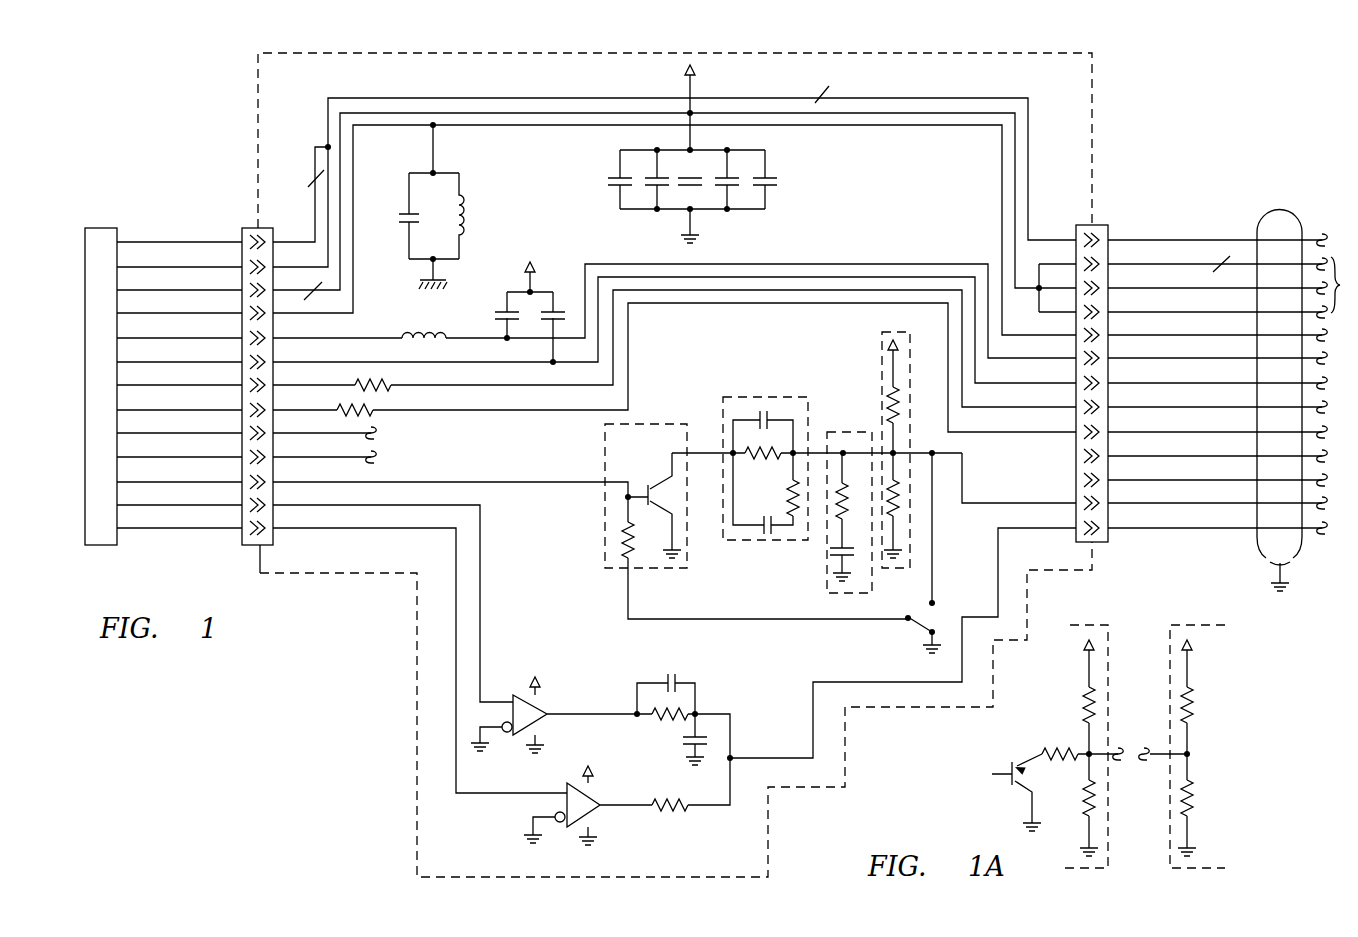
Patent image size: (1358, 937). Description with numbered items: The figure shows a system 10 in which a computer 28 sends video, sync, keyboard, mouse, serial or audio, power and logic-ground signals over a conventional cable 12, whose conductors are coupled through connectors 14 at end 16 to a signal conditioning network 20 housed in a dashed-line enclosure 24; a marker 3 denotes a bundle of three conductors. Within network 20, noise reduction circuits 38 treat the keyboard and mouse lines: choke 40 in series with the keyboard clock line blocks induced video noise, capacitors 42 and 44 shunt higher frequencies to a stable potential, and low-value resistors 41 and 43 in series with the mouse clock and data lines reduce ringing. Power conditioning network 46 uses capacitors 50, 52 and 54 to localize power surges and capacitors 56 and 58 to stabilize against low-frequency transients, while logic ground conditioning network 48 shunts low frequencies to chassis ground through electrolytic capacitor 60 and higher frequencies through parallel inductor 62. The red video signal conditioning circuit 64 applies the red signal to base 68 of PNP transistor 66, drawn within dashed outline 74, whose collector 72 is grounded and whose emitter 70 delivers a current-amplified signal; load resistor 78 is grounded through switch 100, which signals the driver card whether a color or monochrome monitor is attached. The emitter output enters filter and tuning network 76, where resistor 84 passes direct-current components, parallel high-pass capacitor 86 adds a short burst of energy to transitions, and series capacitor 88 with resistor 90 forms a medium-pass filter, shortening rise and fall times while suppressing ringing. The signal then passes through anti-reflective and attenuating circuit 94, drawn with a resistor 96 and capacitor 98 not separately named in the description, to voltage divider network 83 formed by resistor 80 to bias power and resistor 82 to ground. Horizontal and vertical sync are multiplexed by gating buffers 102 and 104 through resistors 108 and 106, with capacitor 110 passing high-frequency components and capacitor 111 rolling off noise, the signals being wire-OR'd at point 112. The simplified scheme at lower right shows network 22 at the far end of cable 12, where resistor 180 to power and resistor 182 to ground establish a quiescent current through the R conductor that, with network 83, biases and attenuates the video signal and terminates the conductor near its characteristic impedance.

In FIG. 1, the system 10 is at (424, 49).
In FIG. 1, the enclosure 24 is at (258, 128).
In FIG. 1, the computer 28 is at (102, 227).
In FIG. 1, the three-conductor bundle 3 is at (764, 189).
In FIG. 1, the logic ground conditioning network 48 is at (435, 205).
In FIG. 1, the electrolytic capacitor 60 is at (406, 214).
In FIG. 1, the inductor 62 is at (463, 212).
In FIG. 1, the signal conditioning network 20 is at (556, 179).
In FIG. 1A, the signal conditioning network 20 is at (1058, 746).
In FIG. 1, the power conditioning network 46 is at (705, 154).
In FIG. 1, the capacitor 50 is at (618, 187).
In FIG. 1, the capacitor 52 is at (656, 190).
In FIG. 1, the capacitor 54 is at (694, 174).
In FIG. 1, the capacitor 56 is at (733, 176).
In FIG. 1, the capacitor 58 is at (769, 177).
In FIG. 1, the choke 40 is at (416, 333).
In FIG. 1, the resistor 41 is at (356, 383).
In FIG. 1, the resistor 43 is at (368, 412).
In FIG. 1, the noise reduction circuits 38 is at (442, 384).
In FIG. 1, the capacitor 42 is at (496, 312).
In FIG. 1, the capacitor 44 is at (561, 312).
In FIG. 1, the transistor stage 74 is at (735, 521).
In FIG. 1, the PNP transistor 66 is at (663, 500).
In FIG. 1A, the PNP transistor 66 is at (1016, 801).
In FIG. 1, the base 68 is at (649, 484).
In FIG. 1, the emitter 70 is at (674, 474).
In FIG. 1, the collector 72 is at (765, 558).
In FIG. 1, the load resistor 78 is at (626, 557).
In FIG. 1, the signal conditioning circuit 64 is at (827, 482).
In FIG. 1, the filter and tuning network 76 is at (783, 473).
In FIG. 1, the resistor 84 is at (752, 450).
In FIG. 1A, the resistor 84 is at (1060, 762).
In FIG. 1, the high pass capacitor 86 is at (763, 411).
In FIG. 1, the capacitor 88 is at (763, 534).
In FIG. 1, the resistor 90 is at (774, 484).
In FIG. 1, the anti-reflective and attenuating circuit 94 is at (857, 501).
In FIG. 1, the resistor 96 is at (843, 482).
In FIG. 1, the capacitor 98 is at (852, 556).
In FIG. 1, the voltage divider network 83 is at (905, 439).
In FIG. 1, the resistor 80 is at (894, 405).
In FIG. 1A, the resistor 80 is at (1085, 713).
In FIG. 1, the resistor 82 is at (898, 490).
In FIG. 1A, the resistor 82 is at (1085, 806).
In FIG. 1, the switch 100 is at (937, 618).
In FIG. 1, the horizontal sync gating buffer 102 is at (540, 704).
In FIG. 1, the vertical sync gating buffer 104 is at (566, 785).
In FIG. 1, the resistor 106 is at (670, 818).
In FIG. 1, the resistor 108 is at (668, 720).
In FIG. 1, the filter capacitor 110 is at (673, 676).
In FIG. 1, the capacitor 111 is at (690, 745).
In FIG. 1, the point 112 is at (733, 758).
In FIG. 1, the connectors 14 is at (1112, 212).
In FIG. 1, the end 16 is at (1193, 180).
In FIG. 1, the cable 12 is at (1276, 206).
In FIG. 1A, the cable 12 is at (1132, 740).
In FIG. 1A, the signal conditioning network 22 is at (1187, 741).
In FIG. 1A, the resistor 180 is at (1195, 712).
In FIG. 1A, the resistor 182 is at (1195, 805).